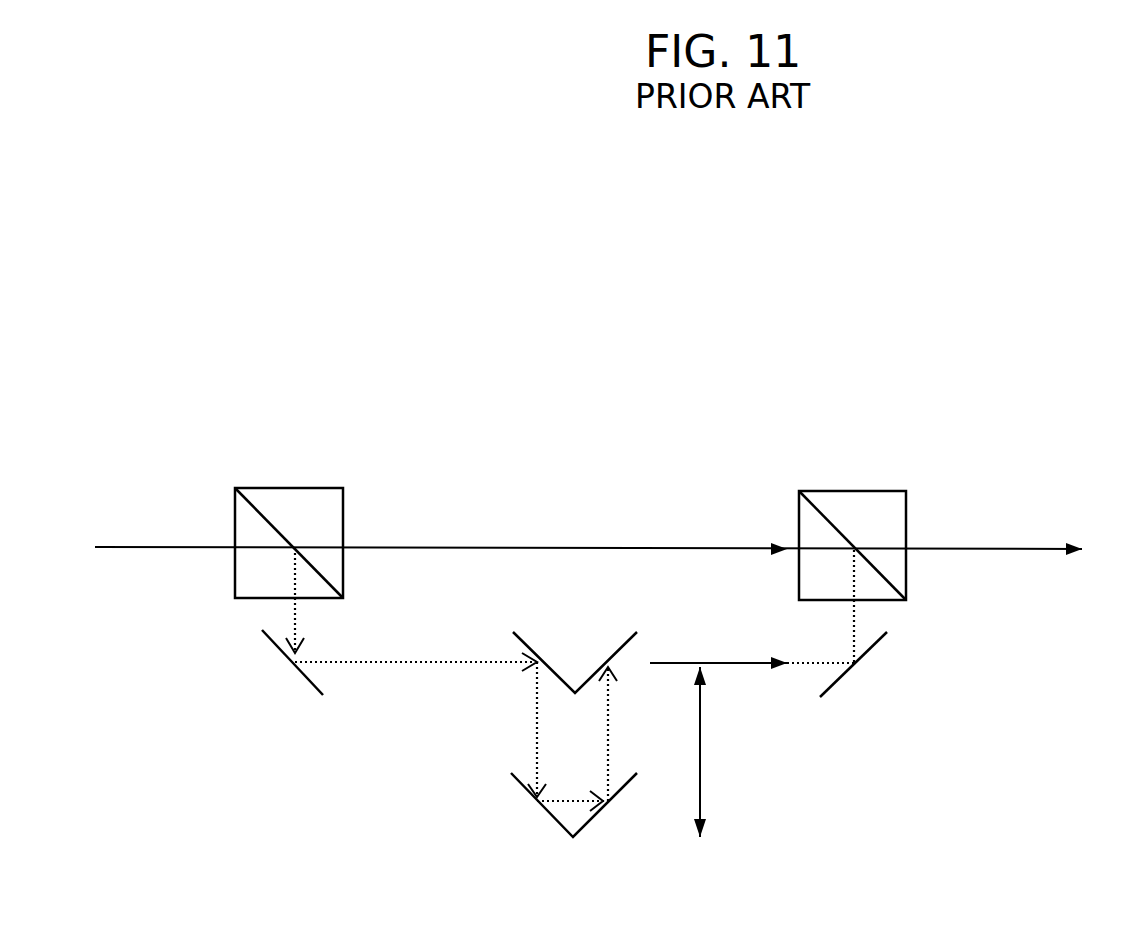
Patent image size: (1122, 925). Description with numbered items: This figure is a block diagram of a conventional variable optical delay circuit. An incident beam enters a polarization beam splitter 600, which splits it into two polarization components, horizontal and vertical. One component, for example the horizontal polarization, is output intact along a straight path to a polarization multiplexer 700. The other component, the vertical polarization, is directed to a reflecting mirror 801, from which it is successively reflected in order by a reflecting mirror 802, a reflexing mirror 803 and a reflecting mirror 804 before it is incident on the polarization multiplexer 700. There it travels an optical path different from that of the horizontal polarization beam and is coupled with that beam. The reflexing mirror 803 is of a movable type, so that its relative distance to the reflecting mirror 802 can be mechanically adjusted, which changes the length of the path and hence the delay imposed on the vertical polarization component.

The polarization beam splitter 600 is at (288, 488).
The polarization multiplexer 700 is at (853, 491).
The reflecting mirror 801 is at (273, 643).
The reflecting mirror 802 is at (628, 640).
The reflexing mirror 803 is at (615, 793).
The reflecting mirror 804 is at (875, 645).